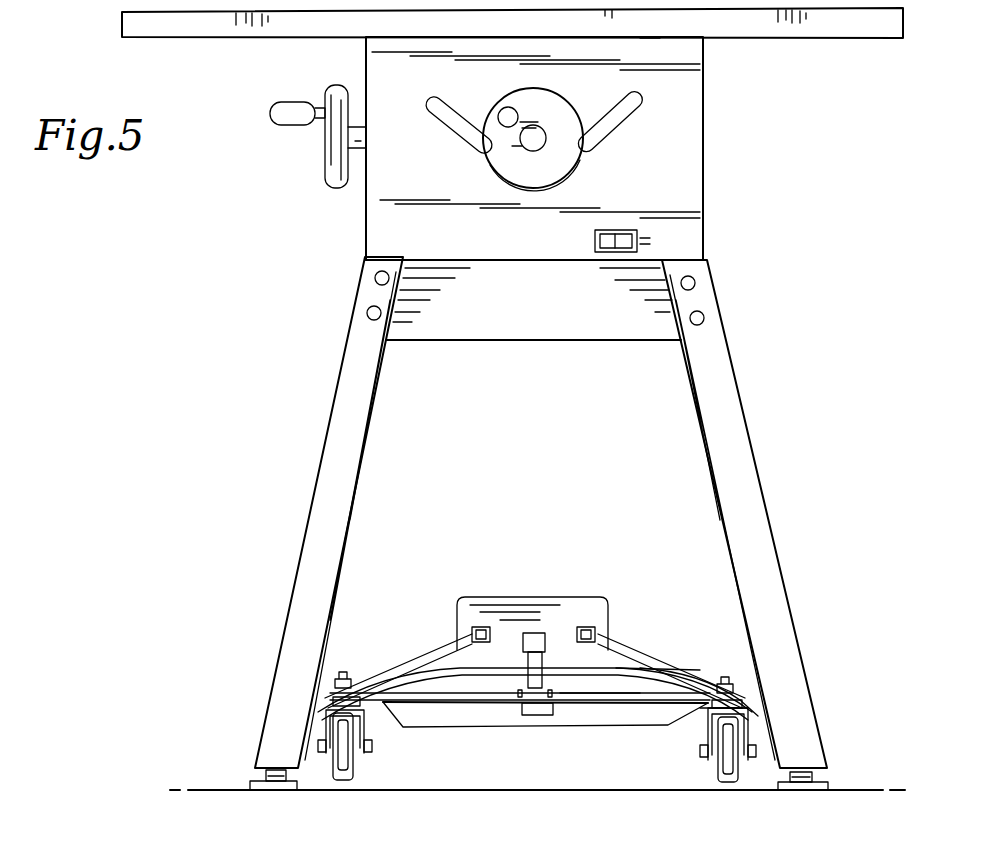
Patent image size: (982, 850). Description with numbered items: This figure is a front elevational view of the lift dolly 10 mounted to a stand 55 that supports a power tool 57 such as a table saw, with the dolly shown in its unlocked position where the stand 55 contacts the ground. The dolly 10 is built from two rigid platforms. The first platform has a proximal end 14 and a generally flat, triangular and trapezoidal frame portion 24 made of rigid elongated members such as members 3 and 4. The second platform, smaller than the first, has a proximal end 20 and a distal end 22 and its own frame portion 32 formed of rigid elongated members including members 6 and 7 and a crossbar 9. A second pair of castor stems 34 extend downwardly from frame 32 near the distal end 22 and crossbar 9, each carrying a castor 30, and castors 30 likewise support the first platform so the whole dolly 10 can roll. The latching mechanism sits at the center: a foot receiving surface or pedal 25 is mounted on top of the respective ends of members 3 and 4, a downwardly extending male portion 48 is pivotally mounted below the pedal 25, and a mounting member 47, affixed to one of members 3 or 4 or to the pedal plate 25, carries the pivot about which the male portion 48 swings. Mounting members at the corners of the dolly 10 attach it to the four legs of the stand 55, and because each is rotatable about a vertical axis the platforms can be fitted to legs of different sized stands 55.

The power tool 57 is at (752, 167).
The lift dolly 10 is at (553, 465).
The stand 55 is at (318, 532).
The foot receiving surface or pedal 25 is at (525, 598).
The proximal end 14 is at (472, 633).
The mounting member 47 is at (540, 635).
The male portion 48 is at (528, 662).
The rigid elongated member 3 is at (445, 648).
The rigid elongated member 4 is at (630, 655).
The rigid elongated member 6 is at (383, 672).
The rigid elongated member 7 is at (692, 672).
The frame portion 32 is at (665, 668).
The frame portion 24 is at (660, 660).
The proximal end 20 is at (597, 673).
The distal end 22 is at (743, 702).
The crossbar 9 is at (478, 703).
The castor 30 is at (353, 763).
The castor stems 34 is at (702, 718).